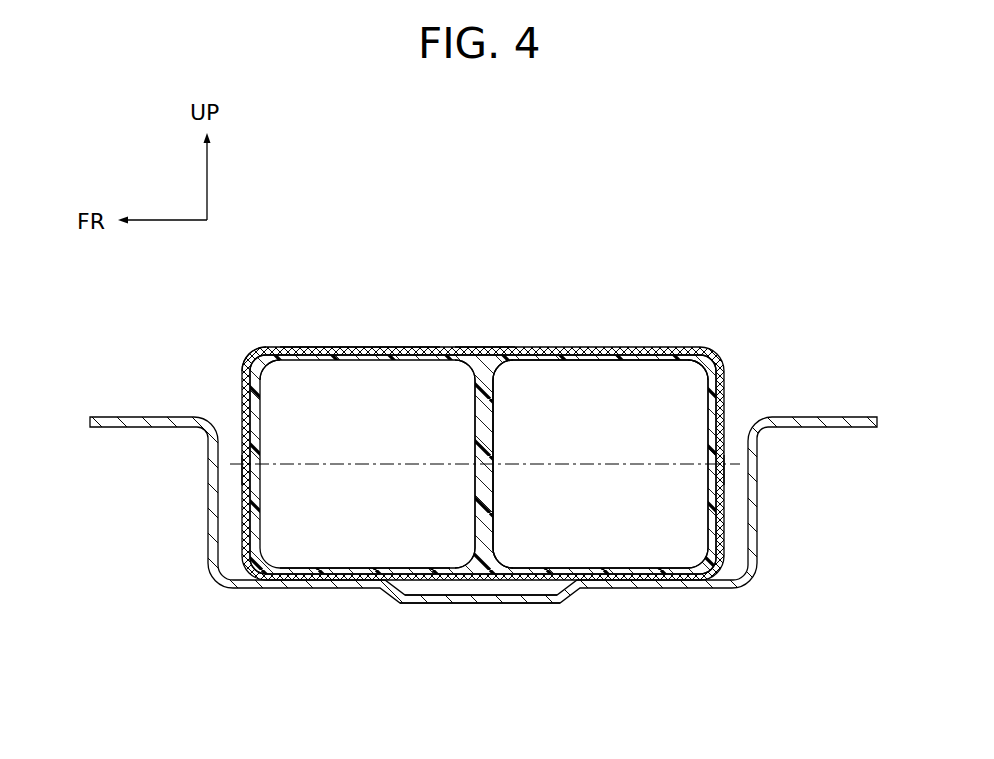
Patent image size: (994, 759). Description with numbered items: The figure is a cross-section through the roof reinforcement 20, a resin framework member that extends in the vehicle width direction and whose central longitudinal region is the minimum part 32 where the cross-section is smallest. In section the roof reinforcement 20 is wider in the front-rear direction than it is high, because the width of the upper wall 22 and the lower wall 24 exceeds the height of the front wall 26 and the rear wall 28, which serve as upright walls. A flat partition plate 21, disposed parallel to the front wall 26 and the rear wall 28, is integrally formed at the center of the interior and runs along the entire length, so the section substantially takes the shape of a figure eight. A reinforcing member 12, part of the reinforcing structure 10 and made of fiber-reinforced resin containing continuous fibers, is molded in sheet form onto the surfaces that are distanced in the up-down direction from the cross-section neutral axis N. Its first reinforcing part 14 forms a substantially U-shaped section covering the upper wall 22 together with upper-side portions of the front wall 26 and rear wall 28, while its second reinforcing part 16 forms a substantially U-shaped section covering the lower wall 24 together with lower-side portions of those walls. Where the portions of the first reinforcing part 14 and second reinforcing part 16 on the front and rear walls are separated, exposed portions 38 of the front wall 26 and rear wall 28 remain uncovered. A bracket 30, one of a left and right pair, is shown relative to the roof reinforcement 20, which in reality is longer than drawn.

The reinforcing structure 10 is at (727, 350).
The reinforcing member 12 is at (477, 339).
The first reinforcing part 14 is at (356, 348).
The second reinforcing part 16 is at (445, 585).
The roof reinforcement 20 is at (705, 305).
The partition plate 21 is at (493, 493).
The upper wall 22 is at (571, 364).
The lower wall 24 is at (362, 568).
The front wall 26 is at (262, 400).
The rear wall 28 is at (706, 398).
The bracket 30 is at (522, 605).
The minimum part 32 is at (271, 336).
The exposed portion 38 is at (230, 478).
The cross-section neutral axis N is at (320, 462).